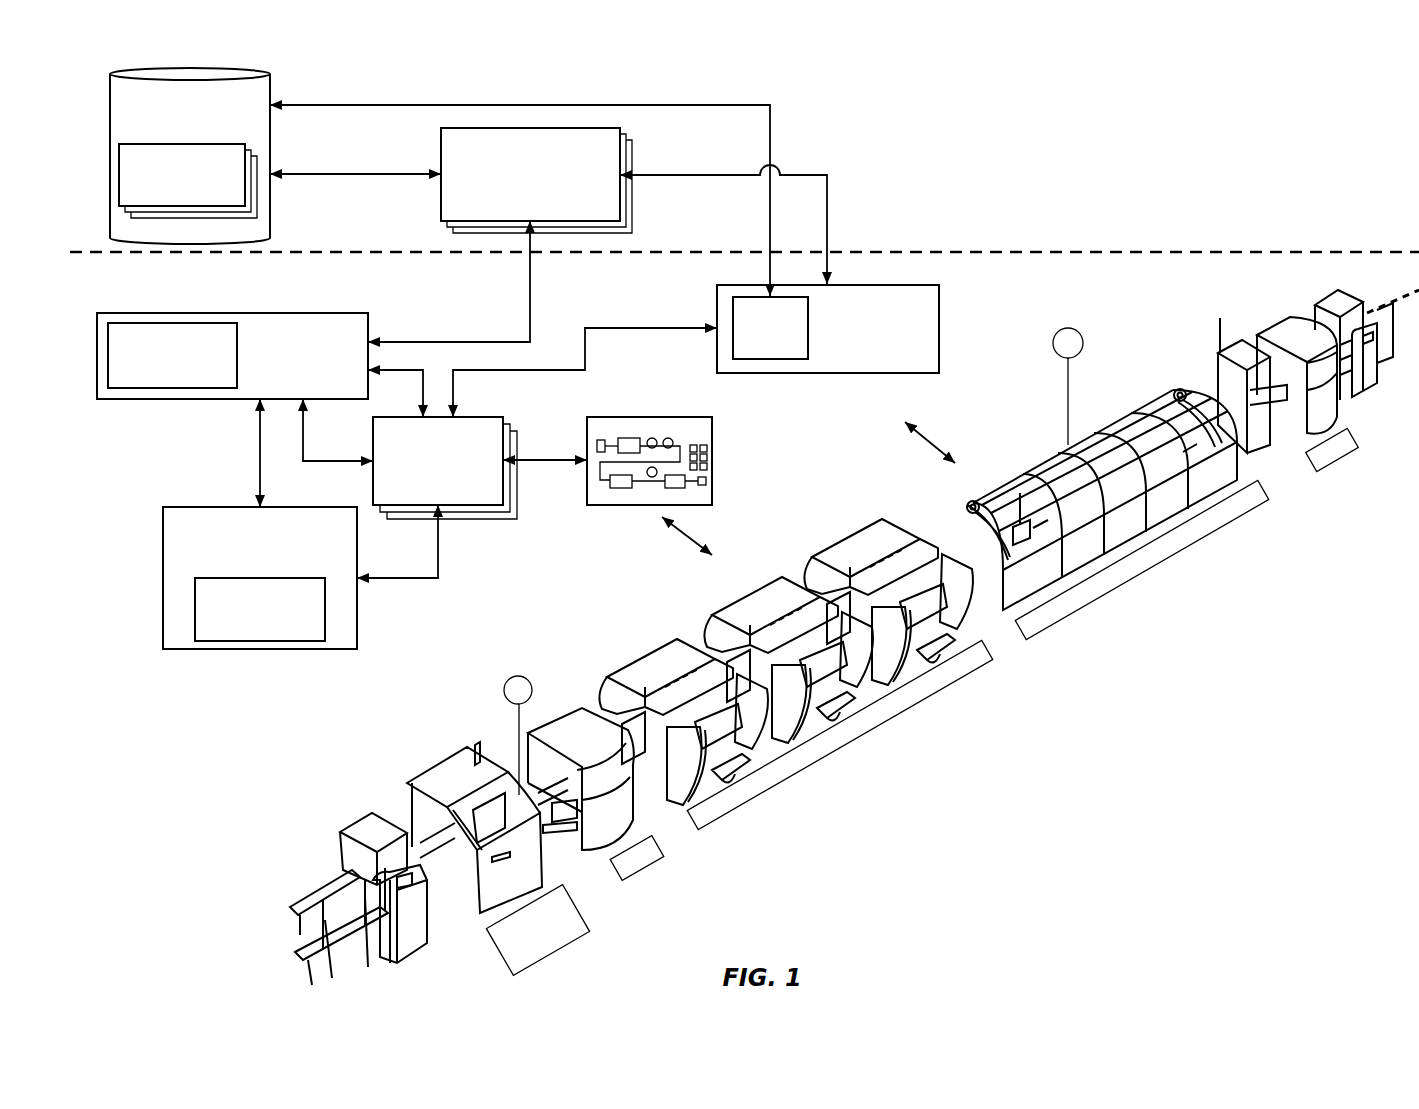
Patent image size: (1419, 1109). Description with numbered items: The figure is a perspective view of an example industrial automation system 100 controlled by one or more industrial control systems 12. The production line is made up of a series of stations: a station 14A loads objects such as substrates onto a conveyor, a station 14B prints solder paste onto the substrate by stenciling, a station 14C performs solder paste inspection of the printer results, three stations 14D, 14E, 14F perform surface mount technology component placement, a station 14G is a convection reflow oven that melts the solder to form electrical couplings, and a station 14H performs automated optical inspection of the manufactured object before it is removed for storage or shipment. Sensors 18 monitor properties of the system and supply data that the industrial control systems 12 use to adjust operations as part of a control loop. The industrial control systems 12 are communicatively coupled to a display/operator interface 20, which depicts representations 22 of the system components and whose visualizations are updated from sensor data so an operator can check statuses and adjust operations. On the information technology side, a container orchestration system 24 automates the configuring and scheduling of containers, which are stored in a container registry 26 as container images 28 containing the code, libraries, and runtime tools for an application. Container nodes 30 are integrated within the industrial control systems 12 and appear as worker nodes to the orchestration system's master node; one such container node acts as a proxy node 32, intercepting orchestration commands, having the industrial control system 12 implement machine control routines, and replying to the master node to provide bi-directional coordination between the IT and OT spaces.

The industrial automation system 100 is at (1357, 123).
The industrial control system 12 is at (163, 572).
The station 14A is at (355, 830).
The station 14B is at (438, 767).
The station 14C is at (556, 715).
The station 14D is at (638, 657).
The station 14E is at (750, 598).
The station 14F is at (848, 540).
The station 14G is at (1055, 462).
The station 14H is at (1273, 325).
The sensor 18 is at (1076, 330).
The display/operator interface 20 is at (668, 445).
The representations 22 is at (635, 432).
The container orchestration system 24 is at (441, 152).
The container registry 26 is at (270, 162).
The container image 28 is at (185, 207).
The container node 30 is at (170, 388).
The proxy node 32 is at (770, 359).